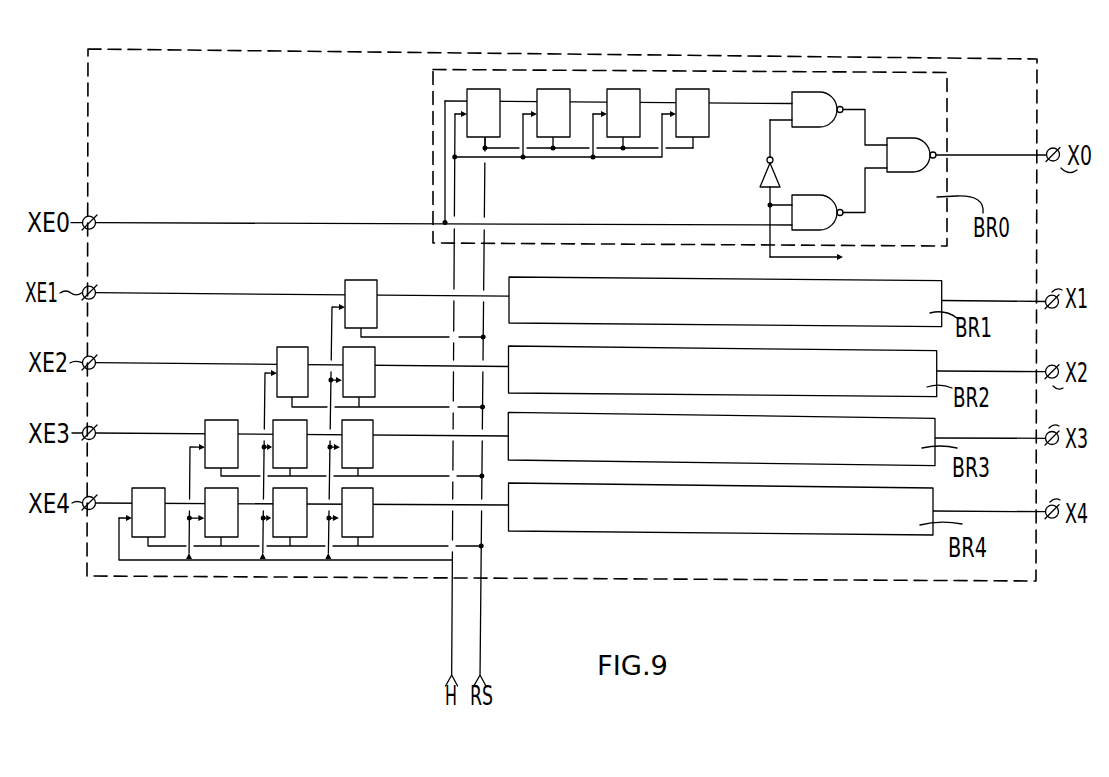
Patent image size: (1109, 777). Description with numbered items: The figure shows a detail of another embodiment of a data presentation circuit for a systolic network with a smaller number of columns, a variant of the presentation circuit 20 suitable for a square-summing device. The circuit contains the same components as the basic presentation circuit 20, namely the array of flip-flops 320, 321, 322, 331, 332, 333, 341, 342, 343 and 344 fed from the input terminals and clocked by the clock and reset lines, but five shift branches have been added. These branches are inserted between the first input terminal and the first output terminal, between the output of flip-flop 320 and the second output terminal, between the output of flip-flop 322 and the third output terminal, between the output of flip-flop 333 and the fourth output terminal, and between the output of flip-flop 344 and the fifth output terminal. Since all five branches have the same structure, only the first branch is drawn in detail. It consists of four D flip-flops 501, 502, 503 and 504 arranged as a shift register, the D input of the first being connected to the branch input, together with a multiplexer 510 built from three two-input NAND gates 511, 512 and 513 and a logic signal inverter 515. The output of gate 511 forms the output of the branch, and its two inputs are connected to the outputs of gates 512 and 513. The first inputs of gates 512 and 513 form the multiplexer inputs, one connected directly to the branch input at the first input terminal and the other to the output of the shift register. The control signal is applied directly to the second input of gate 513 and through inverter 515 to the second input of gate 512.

The presentation circuit 20 is at (760, 568).
The D flip-flop 501 is at (486, 91).
The D flip-flop 502 is at (555, 98).
The D flip-flop 503 is at (618, 98).
The D flip-flop 504 is at (687, 108).
The multiplexer 510 is at (833, 173).
The NAND gate 511 is at (897, 150).
The NAND gate 512 is at (817, 105).
The NAND gate 513 is at (817, 223).
The logic signal inverter 515 is at (761, 181).
The flip-flop 320 is at (357, 282).
The flip-flop 321 is at (293, 358).
The flip-flop 322 is at (365, 377).
The flip-flop 331 is at (228, 418).
The flip-flop 332 is at (288, 422).
The flip-flop 333 is at (362, 432).
The flip-flop 341 is at (150, 500).
The flip-flop 342 is at (214, 525).
The flip-flop 343 is at (285, 528).
The flip-flop 344 is at (362, 521).